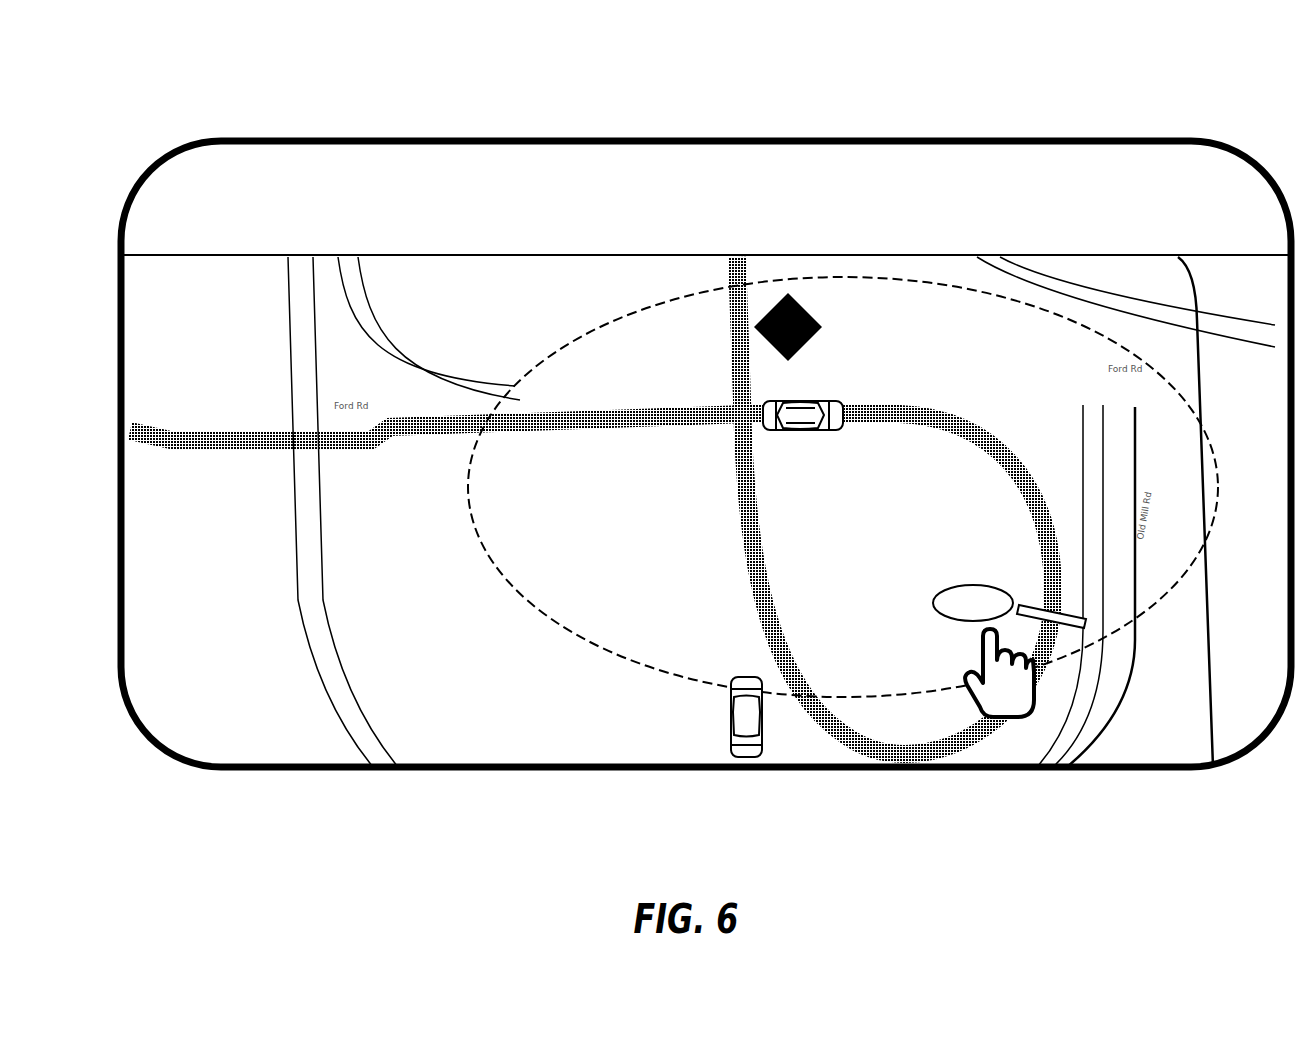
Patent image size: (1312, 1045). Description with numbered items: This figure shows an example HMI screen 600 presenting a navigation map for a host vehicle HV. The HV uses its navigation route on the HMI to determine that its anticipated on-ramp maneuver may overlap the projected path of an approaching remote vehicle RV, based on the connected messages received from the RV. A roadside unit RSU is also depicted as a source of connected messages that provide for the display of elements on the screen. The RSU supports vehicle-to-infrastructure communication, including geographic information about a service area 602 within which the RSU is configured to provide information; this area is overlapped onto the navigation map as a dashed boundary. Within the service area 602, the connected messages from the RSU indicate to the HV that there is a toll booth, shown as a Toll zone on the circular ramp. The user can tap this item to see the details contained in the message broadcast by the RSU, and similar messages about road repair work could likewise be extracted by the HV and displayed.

The HMI screen 600 is at (158, 44).
The service area 602 is at (566, 548).
The host vehicle HV is at (803, 429).
The remote vehicle RV is at (731, 717).
The roadside unit RSU is at (973, 603).
The toll booth Toll is at (1049, 601).